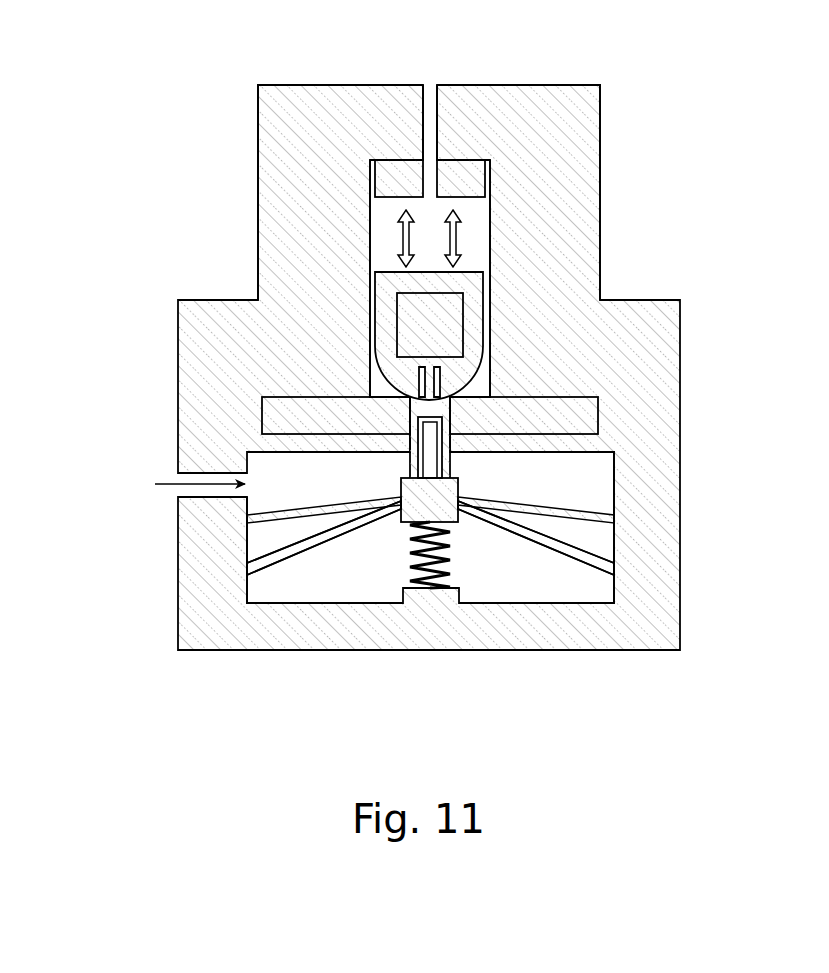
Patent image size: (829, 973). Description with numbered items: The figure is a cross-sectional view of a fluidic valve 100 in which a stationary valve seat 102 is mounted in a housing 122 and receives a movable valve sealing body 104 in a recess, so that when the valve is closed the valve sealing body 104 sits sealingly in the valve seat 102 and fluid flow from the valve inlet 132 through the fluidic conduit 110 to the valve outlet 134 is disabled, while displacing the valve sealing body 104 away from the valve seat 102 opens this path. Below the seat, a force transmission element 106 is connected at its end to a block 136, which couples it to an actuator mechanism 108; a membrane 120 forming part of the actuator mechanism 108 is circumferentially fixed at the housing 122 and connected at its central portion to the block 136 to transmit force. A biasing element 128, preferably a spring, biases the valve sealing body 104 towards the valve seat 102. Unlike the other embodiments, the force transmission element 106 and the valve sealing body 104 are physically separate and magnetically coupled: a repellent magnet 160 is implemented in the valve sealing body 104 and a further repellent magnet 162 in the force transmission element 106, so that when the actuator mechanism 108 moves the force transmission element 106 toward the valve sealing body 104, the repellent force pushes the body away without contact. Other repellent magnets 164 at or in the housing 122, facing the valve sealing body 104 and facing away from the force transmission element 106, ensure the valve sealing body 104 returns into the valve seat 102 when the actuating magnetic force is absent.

The fluidic valve 100 is at (112, 88).
The valve seat 102 is at (277, 413).
The valve sealing body 104 is at (385, 293).
The force transmission element 106 is at (447, 457).
The actuator mechanism 108 is at (325, 545).
The fluidic conduit 110 is at (415, 423).
The membrane 120 is at (262, 557).
The housing 122 is at (322, 125).
The biasing element 128 is at (405, 562).
The valve inlet 132 is at (195, 490).
The valve outlet 134 is at (432, 100).
The block 136 is at (444, 488).
The repellent magnet 160 is at (450, 305).
The further repellent magnet 162 is at (430, 457).
The other repellent magnet 164 is at (400, 178).